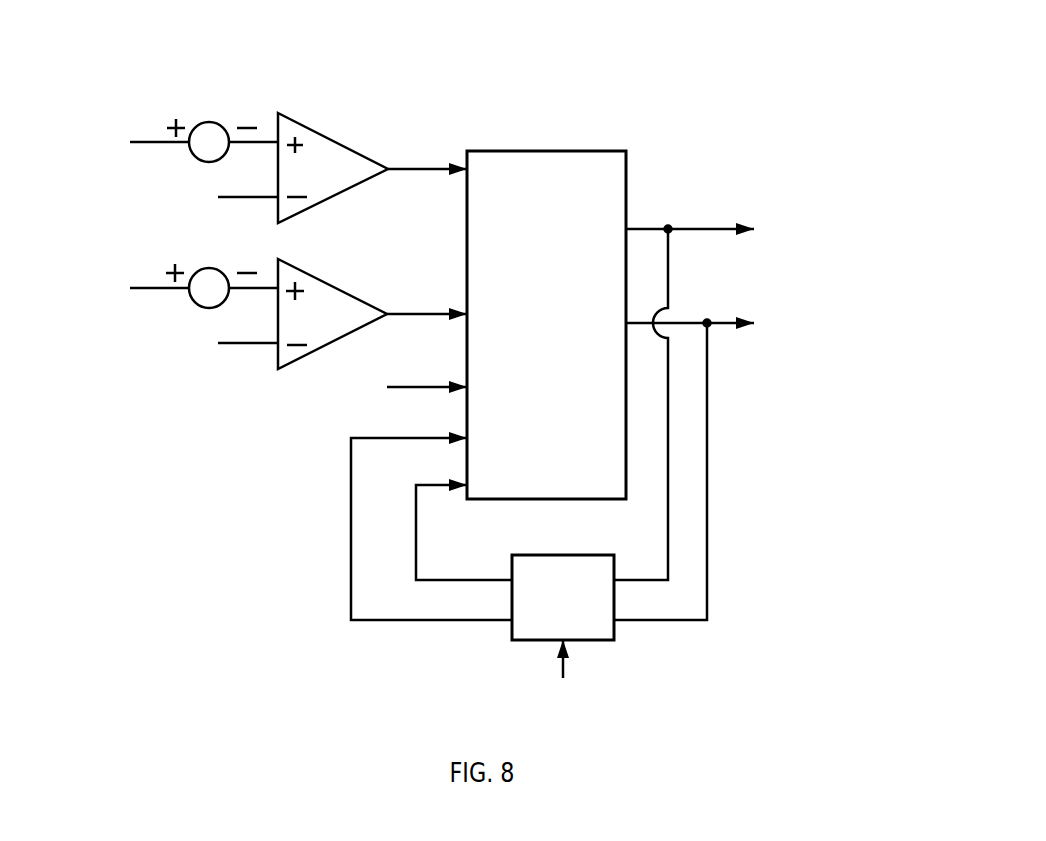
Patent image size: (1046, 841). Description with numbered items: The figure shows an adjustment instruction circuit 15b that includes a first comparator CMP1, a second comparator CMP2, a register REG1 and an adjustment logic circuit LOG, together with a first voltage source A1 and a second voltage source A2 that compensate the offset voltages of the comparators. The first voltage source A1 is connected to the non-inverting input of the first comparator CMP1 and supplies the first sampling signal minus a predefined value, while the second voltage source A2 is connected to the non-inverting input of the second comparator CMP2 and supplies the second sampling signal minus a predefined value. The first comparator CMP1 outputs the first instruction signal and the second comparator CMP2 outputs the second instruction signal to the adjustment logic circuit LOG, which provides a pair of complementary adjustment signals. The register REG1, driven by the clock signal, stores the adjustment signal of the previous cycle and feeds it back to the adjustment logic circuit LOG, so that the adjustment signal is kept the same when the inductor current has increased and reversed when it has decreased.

The adjustment instruction circuit 15b is at (748, 55).
The first voltage source A1 is at (212, 121).
The second voltage source A2 is at (211, 274).
The first comparator CMP1 is at (333, 168).
The second comparator CMP2 is at (332, 314).
The adjustment logic circuit LOG is at (546, 325).
The register REG1 is at (563, 597).